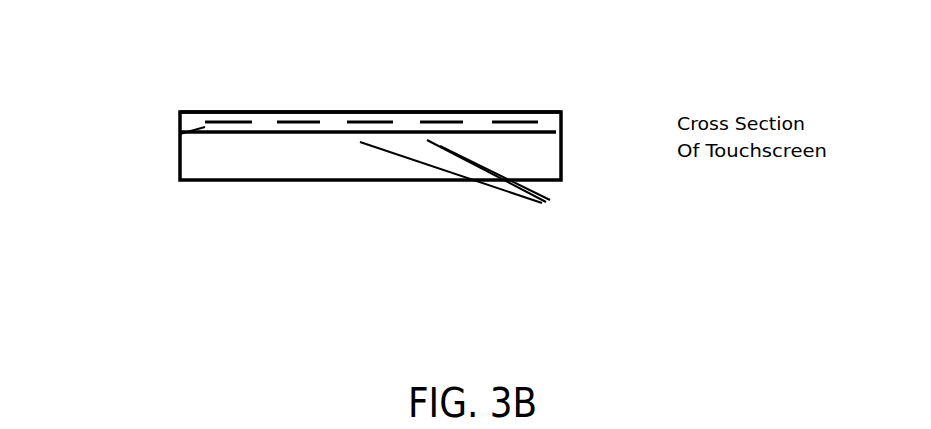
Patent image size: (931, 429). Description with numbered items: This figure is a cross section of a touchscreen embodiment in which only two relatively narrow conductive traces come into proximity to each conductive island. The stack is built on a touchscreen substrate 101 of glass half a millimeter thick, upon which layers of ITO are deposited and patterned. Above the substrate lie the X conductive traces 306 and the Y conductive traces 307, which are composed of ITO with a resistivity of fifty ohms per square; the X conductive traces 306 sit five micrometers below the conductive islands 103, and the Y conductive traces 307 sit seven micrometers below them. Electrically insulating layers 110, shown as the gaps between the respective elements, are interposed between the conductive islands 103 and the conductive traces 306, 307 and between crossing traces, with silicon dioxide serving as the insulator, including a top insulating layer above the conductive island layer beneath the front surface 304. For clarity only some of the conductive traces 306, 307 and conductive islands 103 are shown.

The touchscreen substrate 101 is at (278, 167).
The conductive islands 103 is at (220, 124).
The electrically insulating layers 110 is at (593, 170).
The front surface 304 is at (317, 110).
The X conductive traces 306 is at (190, 135).
The Y conductive traces 307 is at (524, 206).